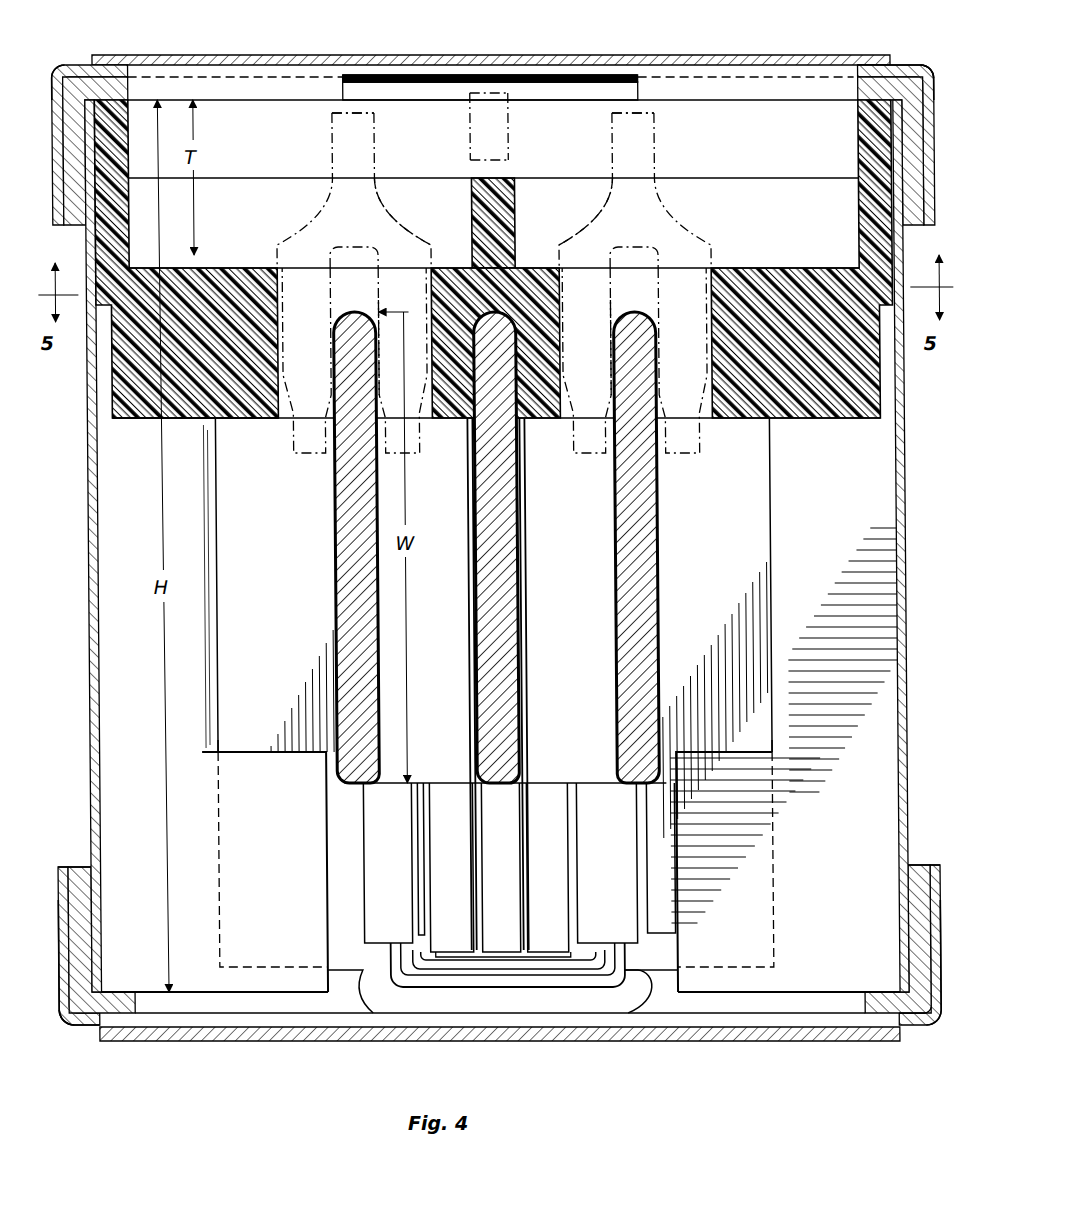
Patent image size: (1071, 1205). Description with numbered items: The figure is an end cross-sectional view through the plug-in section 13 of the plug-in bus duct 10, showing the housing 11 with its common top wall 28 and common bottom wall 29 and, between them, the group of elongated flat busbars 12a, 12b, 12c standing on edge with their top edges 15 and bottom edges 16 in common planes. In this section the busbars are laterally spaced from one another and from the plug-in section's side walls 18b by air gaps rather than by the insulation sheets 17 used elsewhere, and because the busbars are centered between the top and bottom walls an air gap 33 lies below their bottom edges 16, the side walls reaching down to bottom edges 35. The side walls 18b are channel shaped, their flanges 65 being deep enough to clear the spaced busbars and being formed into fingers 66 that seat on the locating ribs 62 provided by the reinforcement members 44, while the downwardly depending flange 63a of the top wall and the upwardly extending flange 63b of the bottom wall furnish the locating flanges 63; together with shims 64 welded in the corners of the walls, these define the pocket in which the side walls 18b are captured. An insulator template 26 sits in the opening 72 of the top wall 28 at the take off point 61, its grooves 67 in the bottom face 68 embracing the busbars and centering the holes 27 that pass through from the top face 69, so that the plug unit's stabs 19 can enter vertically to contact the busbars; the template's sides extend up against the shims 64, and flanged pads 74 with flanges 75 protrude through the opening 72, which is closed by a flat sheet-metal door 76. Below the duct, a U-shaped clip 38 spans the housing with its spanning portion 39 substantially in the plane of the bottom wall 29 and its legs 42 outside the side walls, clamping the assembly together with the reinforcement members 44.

The plug-in bus duct 10 is at (306, 1104).
The housing 11 is at (924, 1028).
The busbar 12a is at (346, 575).
The busbar 12b is at (506, 598).
The busbar 12c is at (648, 578).
The plug-in section 13 is at (238, 882).
The top edge 15 is at (338, 315).
The bottom edge 16 is at (358, 815).
The insulation sheet 17 is at (573, 888).
The plug-in section side wall 18b is at (88, 593).
The stab 19 is at (468, 144).
The insulator template 26 is at (124, 424).
The hole 27 is at (414, 270).
The top wall 28 is at (903, 66).
The bottom wall 29 is at (75, 1022).
The air gap 33 is at (503, 937).
The bottom edge of side wall 35 is at (545, 930).
The U-shaped clip 38 is at (606, 1006).
The spanning portion 39 is at (447, 1003).
The leg 42 is at (356, 982).
The reinforcement member 44 is at (341, 975).
The take off point 61 is at (494, 42).
The locating rib 62 is at (796, 494).
The locating flange 63 is at (47, 218).
The downwardly depending flange 63a is at (58, 87).
The upwardly extending flange 63b is at (78, 865).
The shim 64 is at (80, 207).
The flange 65 is at (535, 872).
The finger 66 is at (215, 733).
The groove 67 is at (333, 363).
The bottom face 68 is at (250, 423).
The top face 69 is at (240, 267).
The opening 72 is at (152, 57).
The flanged pad 74 is at (266, 86).
The flange 75 is at (294, 72).
The door 76 is at (399, 53).